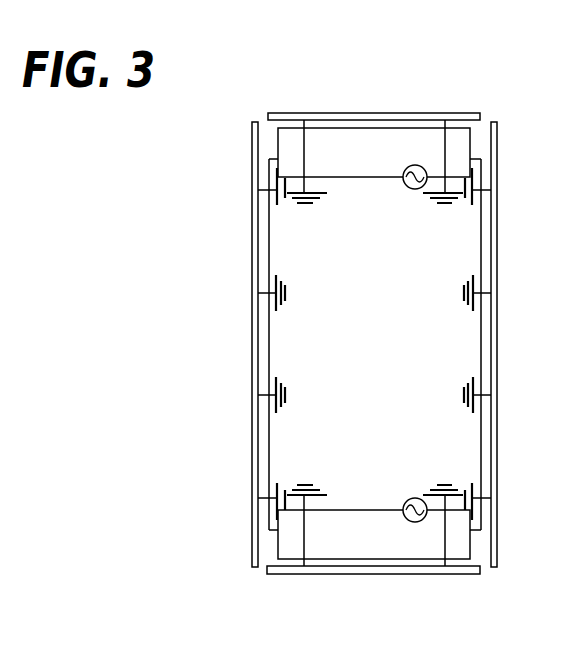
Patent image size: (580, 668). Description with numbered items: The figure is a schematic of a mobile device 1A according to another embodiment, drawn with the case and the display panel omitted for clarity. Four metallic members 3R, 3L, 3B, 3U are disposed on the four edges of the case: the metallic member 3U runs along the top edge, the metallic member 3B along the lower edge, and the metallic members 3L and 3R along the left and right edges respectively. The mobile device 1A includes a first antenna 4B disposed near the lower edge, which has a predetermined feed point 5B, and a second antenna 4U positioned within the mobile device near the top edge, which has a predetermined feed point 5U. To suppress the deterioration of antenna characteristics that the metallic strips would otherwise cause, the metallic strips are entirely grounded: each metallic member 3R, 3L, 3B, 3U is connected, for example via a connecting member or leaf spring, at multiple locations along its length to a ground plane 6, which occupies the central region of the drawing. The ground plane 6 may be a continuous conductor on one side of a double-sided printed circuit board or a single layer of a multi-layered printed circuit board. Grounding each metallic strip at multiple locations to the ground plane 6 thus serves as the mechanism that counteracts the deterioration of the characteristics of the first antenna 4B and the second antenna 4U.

The mobile device 1A is at (389, 78).
The metallic member 3U is at (337, 113).
The metallic member 3B is at (330, 575).
The metallic member 3L is at (252, 322).
The metallic member 3R is at (498, 338).
The second antenna 4U is at (456, 127).
The first antenna 4B is at (410, 561).
The feed point 5U is at (415, 189).
The feed point 5B is at (417, 497).
The ground plane 6 is at (475, 242).